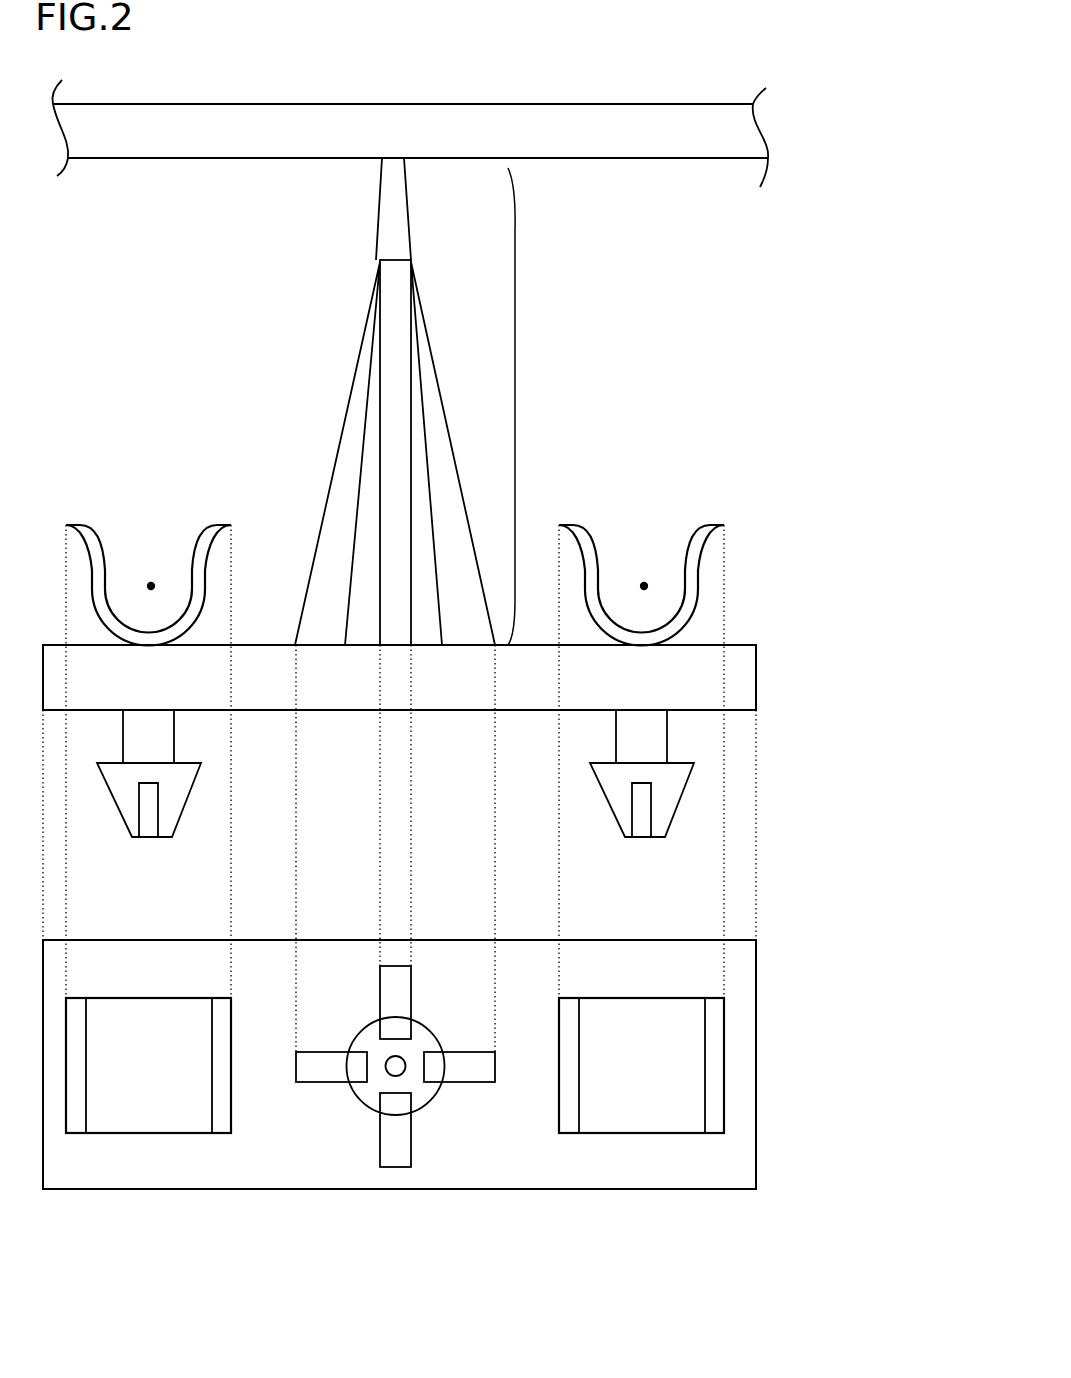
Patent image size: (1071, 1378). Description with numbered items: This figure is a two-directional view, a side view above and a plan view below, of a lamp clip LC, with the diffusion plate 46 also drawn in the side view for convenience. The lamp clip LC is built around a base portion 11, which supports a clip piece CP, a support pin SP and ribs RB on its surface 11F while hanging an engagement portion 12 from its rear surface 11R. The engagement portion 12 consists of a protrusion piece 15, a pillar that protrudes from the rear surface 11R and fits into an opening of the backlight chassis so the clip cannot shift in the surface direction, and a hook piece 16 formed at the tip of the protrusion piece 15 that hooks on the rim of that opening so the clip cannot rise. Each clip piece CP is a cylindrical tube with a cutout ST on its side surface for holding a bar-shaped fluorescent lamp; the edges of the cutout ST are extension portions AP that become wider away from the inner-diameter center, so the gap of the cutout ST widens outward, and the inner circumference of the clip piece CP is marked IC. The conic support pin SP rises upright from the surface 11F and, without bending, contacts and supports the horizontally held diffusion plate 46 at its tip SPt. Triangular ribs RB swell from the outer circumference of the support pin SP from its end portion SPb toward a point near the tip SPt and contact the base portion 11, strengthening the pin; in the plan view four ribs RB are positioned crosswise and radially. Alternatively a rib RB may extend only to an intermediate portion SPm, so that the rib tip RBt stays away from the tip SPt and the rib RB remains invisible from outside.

The diffusion plate 46 is at (410, 133).
The tip of the support pin SPt is at (418, 165).
The lamp clip LC is at (645, 335).
The support pin SP is at (515, 395).
The intermediate portion of the support pin SPm is at (315, 442).
The rib RB is at (395, 713).
The tip of the rib RBt is at (452, 387).
The end portion of the support pin SPb is at (496, 632).
The base portion 11 is at (808, 600).
The surface of the base portion 11F is at (738, 645).
The rear surface of the base portion 11R is at (742, 712).
The clip piece CP is at (66, 490).
The extension portion AP is at (721, 522).
The cutout ST is at (197, 528).
The inner contact point IC is at (644, 586).
The protrusion piece 15 is at (395, 736).
The engagement portion 12 is at (103, 715).
The hook piece 16 is at (128, 835).